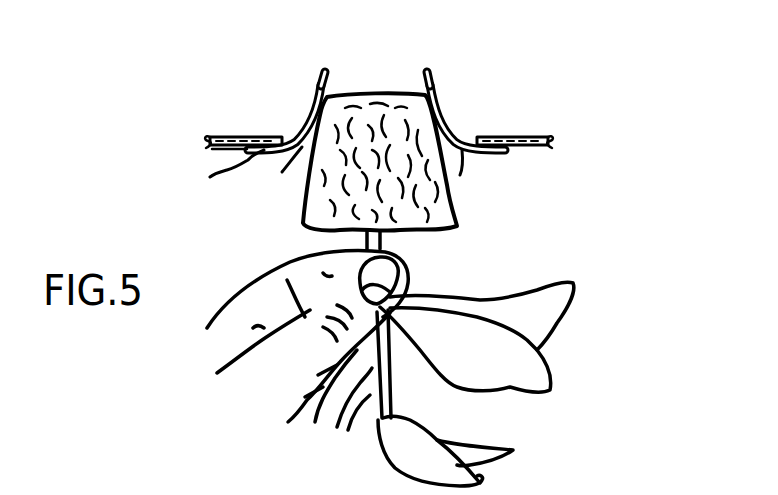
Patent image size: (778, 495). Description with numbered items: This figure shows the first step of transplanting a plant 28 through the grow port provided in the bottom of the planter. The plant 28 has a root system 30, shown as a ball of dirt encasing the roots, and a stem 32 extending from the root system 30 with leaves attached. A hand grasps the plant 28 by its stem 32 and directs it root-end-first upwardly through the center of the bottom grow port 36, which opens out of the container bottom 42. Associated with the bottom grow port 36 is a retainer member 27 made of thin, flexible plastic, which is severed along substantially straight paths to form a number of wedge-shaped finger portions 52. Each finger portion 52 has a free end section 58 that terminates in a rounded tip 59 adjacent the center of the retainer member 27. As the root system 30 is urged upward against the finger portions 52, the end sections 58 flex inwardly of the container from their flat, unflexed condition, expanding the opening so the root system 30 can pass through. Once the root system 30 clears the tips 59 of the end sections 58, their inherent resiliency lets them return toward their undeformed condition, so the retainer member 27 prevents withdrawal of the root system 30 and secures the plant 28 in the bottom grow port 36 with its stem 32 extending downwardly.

The retainer member 27 is at (218, 181).
The plant 28 is at (485, 480).
The root system 30 is at (373, 96).
The stem 32 is at (354, 351).
The bottom grow port 36 is at (473, 155).
The bottom 42 is at (211, 149).
The finger portion 52 is at (372, 180).
The end section 58 is at (302, 120).
The tip 59 is at (326, 72).